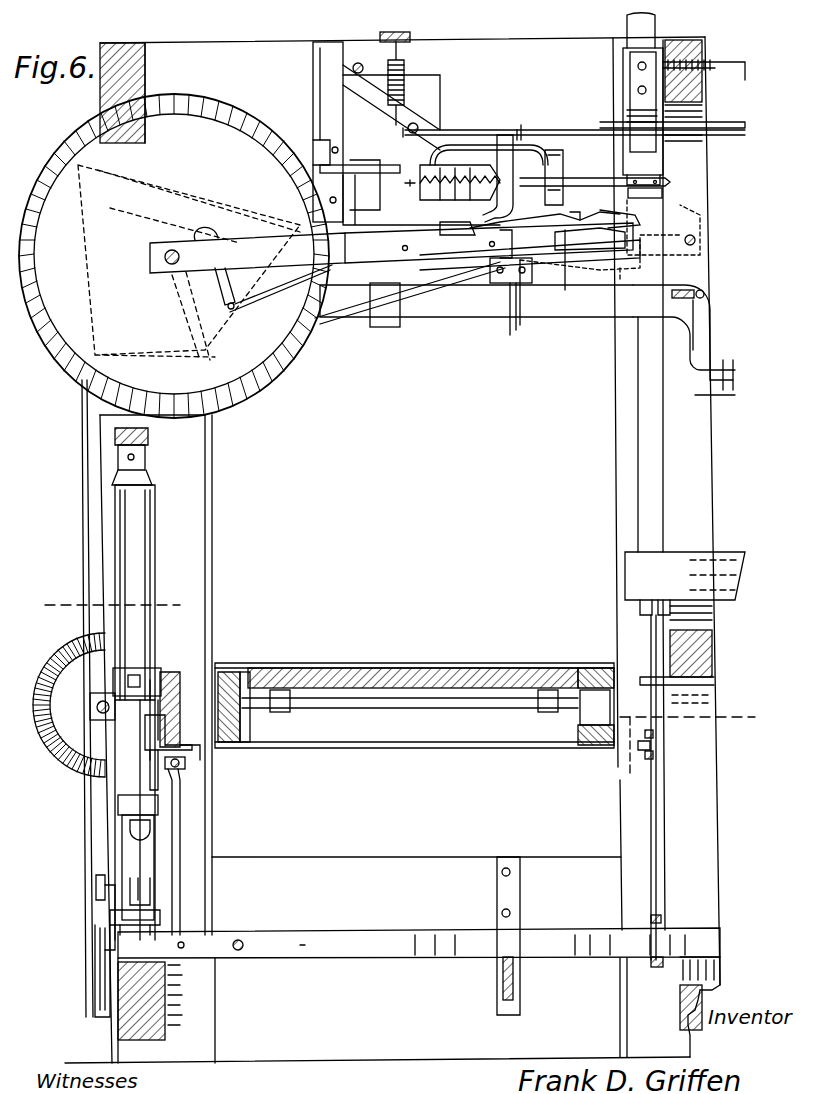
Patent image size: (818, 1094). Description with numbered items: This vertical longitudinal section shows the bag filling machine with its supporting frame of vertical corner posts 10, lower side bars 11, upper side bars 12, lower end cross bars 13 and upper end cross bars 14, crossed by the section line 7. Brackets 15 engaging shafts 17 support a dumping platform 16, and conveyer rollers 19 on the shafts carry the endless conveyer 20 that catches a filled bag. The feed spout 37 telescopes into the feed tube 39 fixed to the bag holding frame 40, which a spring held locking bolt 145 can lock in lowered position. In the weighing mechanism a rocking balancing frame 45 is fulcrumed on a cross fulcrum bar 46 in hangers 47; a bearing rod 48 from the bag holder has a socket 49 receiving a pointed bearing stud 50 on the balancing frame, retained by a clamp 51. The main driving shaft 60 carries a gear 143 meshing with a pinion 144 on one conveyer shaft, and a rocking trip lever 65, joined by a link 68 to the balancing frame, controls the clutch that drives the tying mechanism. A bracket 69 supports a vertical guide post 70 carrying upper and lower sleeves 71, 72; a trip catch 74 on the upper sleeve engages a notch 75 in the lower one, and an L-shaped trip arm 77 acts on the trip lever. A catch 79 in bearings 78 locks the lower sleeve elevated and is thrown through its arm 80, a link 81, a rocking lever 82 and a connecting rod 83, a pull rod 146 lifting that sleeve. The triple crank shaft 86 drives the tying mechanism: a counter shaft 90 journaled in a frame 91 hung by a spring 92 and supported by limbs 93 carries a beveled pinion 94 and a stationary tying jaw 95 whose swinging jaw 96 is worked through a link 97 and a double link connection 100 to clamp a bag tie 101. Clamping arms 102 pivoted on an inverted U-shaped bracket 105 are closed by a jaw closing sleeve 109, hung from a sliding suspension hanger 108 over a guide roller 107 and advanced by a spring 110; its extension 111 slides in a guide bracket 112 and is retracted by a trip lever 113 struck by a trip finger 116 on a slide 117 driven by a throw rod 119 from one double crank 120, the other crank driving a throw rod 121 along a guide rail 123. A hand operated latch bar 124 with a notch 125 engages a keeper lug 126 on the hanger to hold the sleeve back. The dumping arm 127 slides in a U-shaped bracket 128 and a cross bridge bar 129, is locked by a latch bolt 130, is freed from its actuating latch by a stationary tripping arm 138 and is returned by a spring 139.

The section line 7 is at (401, 661).
The vertical corner posts 10 is at (700, 485).
The lower side bars 11 is at (382, 857).
The upper side bars 12 is at (523, 41).
The lower end cross bars 13 is at (143, 1000).
The upper end cross bars 14 is at (100, 88).
The brackets 15 is at (300, 712).
The dumping platform 16 is at (350, 665).
The shafts 17 is at (412, 708).
The conveyer rollers 19 is at (242, 718).
The endless conveyer 20 is at (470, 665).
The feed spout 37 is at (55, 372).
The feed tube 39 is at (650, 172).
The bag holder frame 40 is at (702, 105).
The rocking balancing frame 45 is at (410, 957).
The cross fulcrum bar 46 is at (513, 976).
The hangers 47 is at (514, 1015).
The bearing standard or rod 48 is at (657, 815).
The socket 49 is at (665, 915).
The pointed bearing stud 50 is at (703, 925).
The clamp 51 is at (660, 970).
The main driving shaft 60 is at (90, 707).
The rocking trip lever 65 is at (183, 770).
The link 68 is at (180, 810).
The bracket 69 is at (150, 450).
The vertical guide post 70 is at (132, 785).
The upper sleeve 71 is at (155, 513).
The lower sleeve 72 is at (150, 845).
The trip catch 74 is at (145, 737).
The notch 75 is at (128, 825).
The L-shaped trip arm 77 is at (198, 752).
The bearings 78 is at (110, 910).
The catch 79 is at (148, 878).
The arm 80 is at (96, 886).
The link 81 is at (95, 943).
The rocking lever 82 is at (100, 962).
The connecting rod 83 is at (82, 470).
The triple crank shaft 86 is at (165, 258).
The counter shaft 90 is at (530, 283).
The frame 91 is at (418, 248).
The spring 92 is at (340, 70).
The limbs 93 is at (247, 250).
The beveled pinion 94 is at (318, 278).
The stationary tying jaw 95 is at (618, 256).
The swinging tying jaw 96 is at (605, 228).
The link 97 is at (560, 260).
The double link connection 100 is at (228, 306).
The staple-like bag tie 101 is at (692, 212).
The swinging clamping arms 102 is at (672, 182).
The inverted U-shaped bracket 105 is at (500, 135).
The guide roller 107 is at (483, 125).
The sliding suspension hanger 108 is at (458, 147).
The jaw closing sleeve 109 is at (556, 155).
The coiled retractile spring 110 is at (475, 230).
The extension 111 is at (395, 170).
The guide bracket 112 is at (455, 190).
The trip lever 113 is at (365, 160).
The trip finger 116 is at (318, 162).
The slide 117 is at (508, 286).
The throw rod 119 is at (412, 318).
The double cranks 120 is at (176, 310).
The throw rod 121 is at (172, 196).
The guide rail 123 is at (697, 240).
The hand operated latch bar 124 is at (748, 124).
The notch 125 is at (527, 133).
The keeper lug 126 is at (521, 125).
The dumping arm 127 is at (688, 340).
The U-shaped bracket 128 is at (458, 318).
The cross bridge bar 129 is at (398, 34).
The latch bolt 130 is at (348, 300).
The stationary tripping arm 138 is at (403, 112).
The coiled retractile spring 139 is at (705, 290).
The gear 143 is at (68, 655).
The pinion 144 is at (182, 672).
The spring held locking bolt 145 is at (740, 60).
The pull rod 146 is at (88, 290).